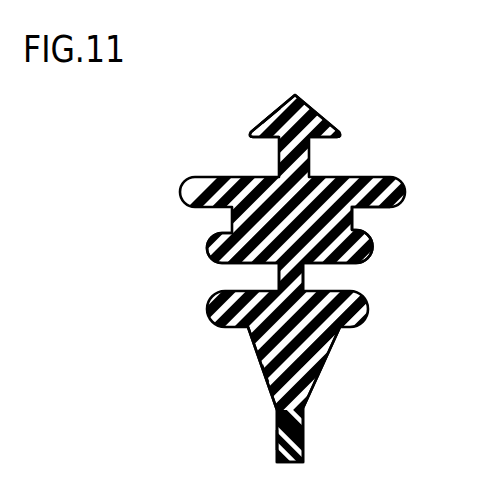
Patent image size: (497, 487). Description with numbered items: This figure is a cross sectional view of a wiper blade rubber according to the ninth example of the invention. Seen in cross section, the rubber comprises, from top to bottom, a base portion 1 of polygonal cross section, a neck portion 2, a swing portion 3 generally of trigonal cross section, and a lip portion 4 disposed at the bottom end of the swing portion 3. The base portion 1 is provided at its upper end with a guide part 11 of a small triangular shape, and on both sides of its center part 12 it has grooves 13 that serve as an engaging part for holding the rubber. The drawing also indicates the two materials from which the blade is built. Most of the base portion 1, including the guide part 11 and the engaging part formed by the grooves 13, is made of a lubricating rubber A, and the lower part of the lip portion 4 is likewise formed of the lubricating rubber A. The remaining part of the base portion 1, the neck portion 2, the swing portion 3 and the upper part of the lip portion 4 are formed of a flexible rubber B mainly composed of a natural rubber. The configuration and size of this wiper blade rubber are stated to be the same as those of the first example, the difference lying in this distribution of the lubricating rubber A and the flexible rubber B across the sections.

The base portion 1 is at (372, 176).
The guide part 11 is at (320, 114).
The center part 12 is at (357, 211).
The grooves 13 is at (361, 223).
The neck portion 2 is at (304, 272).
The swing portion 3 is at (327, 349).
The lip portion 4 is at (299, 438).
The lubricating rubber A is at (271, 120).
The flexible rubber B is at (271, 373).